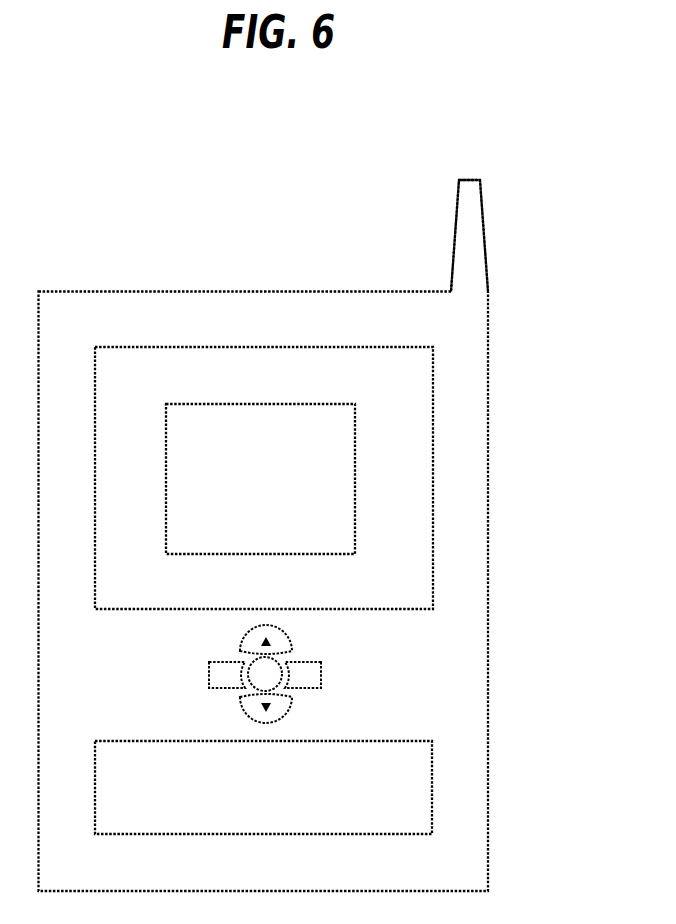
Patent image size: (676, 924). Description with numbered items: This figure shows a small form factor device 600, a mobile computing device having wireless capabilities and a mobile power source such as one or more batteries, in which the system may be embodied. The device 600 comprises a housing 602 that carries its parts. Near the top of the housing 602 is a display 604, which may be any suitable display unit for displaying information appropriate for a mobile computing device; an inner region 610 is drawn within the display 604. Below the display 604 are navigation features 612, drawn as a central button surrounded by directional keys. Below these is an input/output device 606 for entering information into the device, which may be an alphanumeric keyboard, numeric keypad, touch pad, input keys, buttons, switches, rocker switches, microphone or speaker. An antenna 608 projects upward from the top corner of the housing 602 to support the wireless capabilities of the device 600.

The small form factor device 600 is at (300, 118).
The housing 602 is at (489, 623).
The display 604 is at (435, 410).
The input/output (I/O) device 606 is at (433, 792).
The antenna 608 is at (484, 222).
The display window 610 is at (166, 496).
The navigation features 612 is at (336, 659).